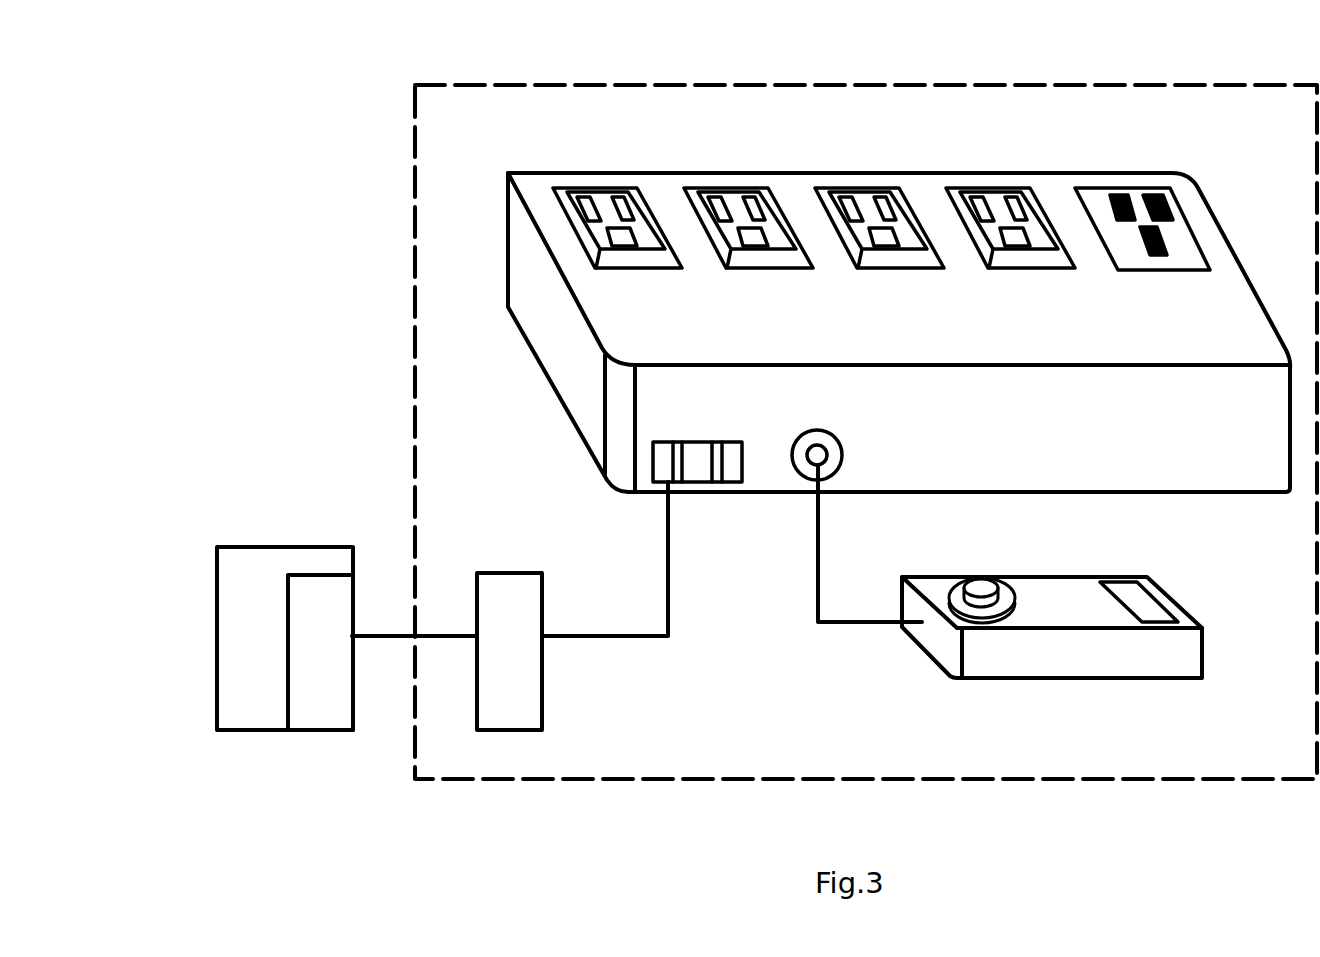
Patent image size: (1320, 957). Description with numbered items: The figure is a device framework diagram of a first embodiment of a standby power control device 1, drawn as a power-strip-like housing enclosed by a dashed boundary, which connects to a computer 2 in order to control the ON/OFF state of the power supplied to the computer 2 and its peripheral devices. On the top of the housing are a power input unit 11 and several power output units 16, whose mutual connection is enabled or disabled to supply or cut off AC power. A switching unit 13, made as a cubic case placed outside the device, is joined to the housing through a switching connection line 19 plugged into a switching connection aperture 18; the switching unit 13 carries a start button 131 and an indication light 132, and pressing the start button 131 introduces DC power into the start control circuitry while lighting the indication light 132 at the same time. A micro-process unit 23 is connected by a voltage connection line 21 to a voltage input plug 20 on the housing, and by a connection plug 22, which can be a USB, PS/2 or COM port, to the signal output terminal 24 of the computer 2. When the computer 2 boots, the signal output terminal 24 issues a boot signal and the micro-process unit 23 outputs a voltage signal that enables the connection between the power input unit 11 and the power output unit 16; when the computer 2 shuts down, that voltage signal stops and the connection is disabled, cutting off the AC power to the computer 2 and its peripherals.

The standby power control device 1 is at (396, 140).
The computer 2 is at (217, 680).
The power input unit 11 is at (1178, 235).
The switching unit 13 is at (925, 640).
The start button 131 is at (1012, 590).
The indication light 132 is at (1157, 608).
The power output unit 16 is at (608, 183).
The switching connection aperture 18 is at (833, 472).
The switching connection line 19 is at (815, 543).
The voltage input plug 20 is at (720, 483).
The voltage connection line 21 is at (620, 640).
The connection plug 22 is at (460, 640).
The micro-process unit 23 is at (483, 573).
The signal output terminal 24 is at (307, 728).